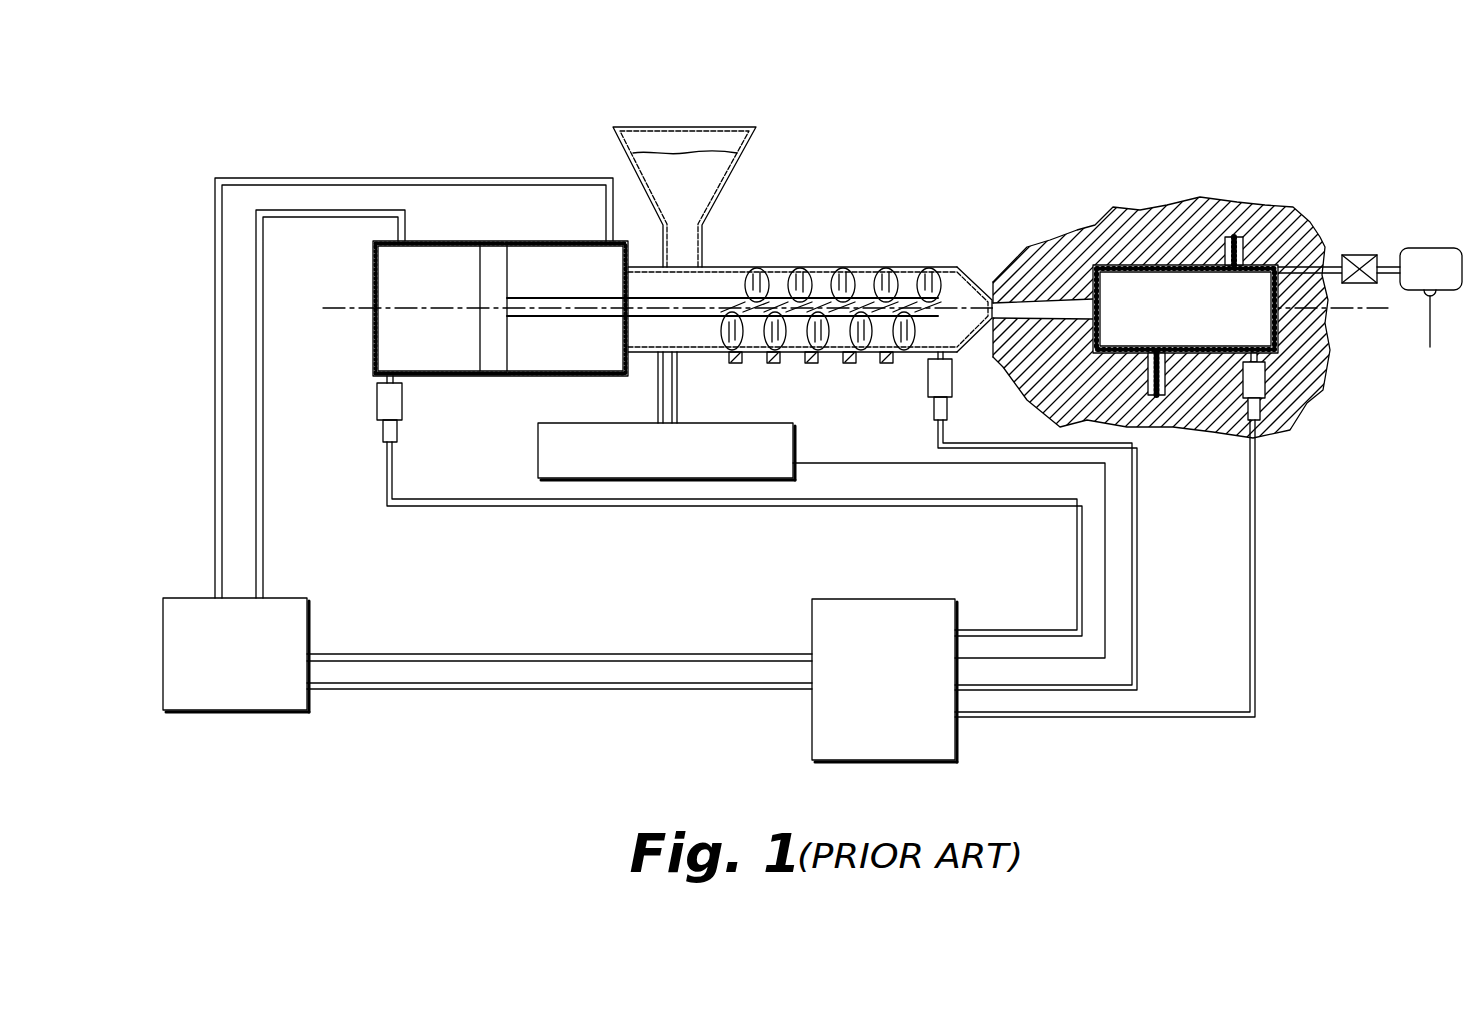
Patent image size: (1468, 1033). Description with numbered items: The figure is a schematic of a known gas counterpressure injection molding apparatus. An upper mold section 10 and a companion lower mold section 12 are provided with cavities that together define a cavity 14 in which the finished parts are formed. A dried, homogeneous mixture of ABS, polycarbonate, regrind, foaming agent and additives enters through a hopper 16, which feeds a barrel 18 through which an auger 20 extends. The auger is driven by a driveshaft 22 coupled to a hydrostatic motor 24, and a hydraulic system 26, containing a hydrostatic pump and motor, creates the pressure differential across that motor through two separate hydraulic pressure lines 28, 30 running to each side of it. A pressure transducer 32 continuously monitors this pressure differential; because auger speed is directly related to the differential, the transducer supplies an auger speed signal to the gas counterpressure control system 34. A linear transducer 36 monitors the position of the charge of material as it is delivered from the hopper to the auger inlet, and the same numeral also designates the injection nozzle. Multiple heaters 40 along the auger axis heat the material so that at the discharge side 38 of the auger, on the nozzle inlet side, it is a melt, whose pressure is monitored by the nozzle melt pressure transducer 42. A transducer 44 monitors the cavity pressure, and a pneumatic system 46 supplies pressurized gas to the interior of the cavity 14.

The upper mold section 10 is at (1105, 277).
The lower mold section 12 is at (1308, 400).
The cavity 14 is at (1262, 293).
The hopper 16 is at (725, 125).
The barrel 18 is at (773, 267).
The auger 20 is at (863, 352).
The driveshaft 22 is at (549, 300).
The hydrostatic motor 24 is at (453, 386).
The hydraulic system 26 is at (310, 622).
The hydraulic pressure line 28 is at (263, 533).
The hydraulic pressure line 30 is at (215, 507).
The pressure transducer 32 is at (373, 404).
The gas counterpressure control system 34 is at (958, 614).
The linear transducer 36 is at (537, 473).
The discharge side of the auger 38 is at (970, 300).
The heaters 40 is at (812, 360).
The nozzle melt pressure transducer 42 is at (928, 390).
The cavity pressure transducer 44 is at (1243, 384).
The pneumatic system 46 is at (1433, 248).